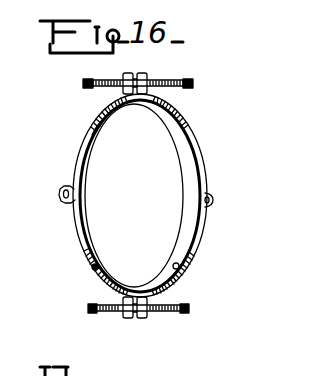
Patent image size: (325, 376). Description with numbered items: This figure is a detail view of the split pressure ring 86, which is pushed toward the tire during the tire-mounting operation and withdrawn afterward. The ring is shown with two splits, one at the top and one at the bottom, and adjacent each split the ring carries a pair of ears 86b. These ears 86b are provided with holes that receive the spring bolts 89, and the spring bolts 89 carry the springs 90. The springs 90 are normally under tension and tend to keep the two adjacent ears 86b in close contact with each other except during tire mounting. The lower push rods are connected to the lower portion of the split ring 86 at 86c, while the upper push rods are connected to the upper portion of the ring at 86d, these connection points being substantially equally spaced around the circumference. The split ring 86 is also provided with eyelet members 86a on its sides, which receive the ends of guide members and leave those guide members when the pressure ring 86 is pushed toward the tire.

The split pressure ring 86 is at (193, 171).
The eyelet members 86a is at (60, 194).
The ears 86b is at (145, 72).
The lower push rod connection 86c is at (175, 265).
The upper push rod connection 86d is at (104, 116).
The spring bolts 89 is at (192, 80).
The springs 90 is at (100, 86).